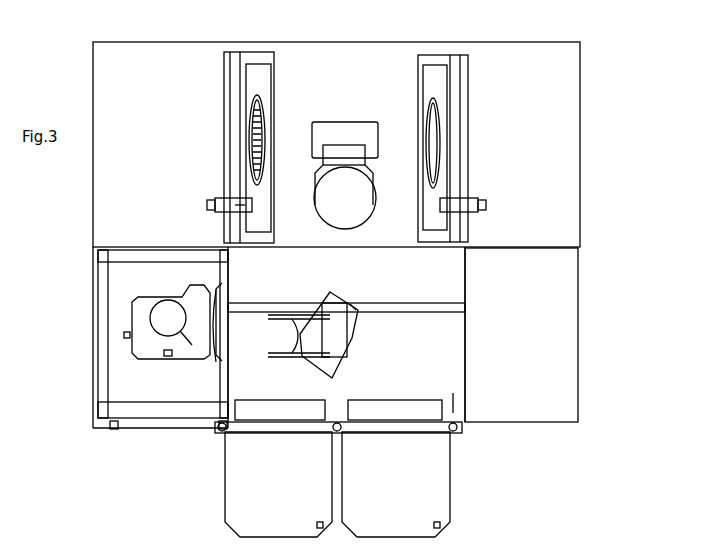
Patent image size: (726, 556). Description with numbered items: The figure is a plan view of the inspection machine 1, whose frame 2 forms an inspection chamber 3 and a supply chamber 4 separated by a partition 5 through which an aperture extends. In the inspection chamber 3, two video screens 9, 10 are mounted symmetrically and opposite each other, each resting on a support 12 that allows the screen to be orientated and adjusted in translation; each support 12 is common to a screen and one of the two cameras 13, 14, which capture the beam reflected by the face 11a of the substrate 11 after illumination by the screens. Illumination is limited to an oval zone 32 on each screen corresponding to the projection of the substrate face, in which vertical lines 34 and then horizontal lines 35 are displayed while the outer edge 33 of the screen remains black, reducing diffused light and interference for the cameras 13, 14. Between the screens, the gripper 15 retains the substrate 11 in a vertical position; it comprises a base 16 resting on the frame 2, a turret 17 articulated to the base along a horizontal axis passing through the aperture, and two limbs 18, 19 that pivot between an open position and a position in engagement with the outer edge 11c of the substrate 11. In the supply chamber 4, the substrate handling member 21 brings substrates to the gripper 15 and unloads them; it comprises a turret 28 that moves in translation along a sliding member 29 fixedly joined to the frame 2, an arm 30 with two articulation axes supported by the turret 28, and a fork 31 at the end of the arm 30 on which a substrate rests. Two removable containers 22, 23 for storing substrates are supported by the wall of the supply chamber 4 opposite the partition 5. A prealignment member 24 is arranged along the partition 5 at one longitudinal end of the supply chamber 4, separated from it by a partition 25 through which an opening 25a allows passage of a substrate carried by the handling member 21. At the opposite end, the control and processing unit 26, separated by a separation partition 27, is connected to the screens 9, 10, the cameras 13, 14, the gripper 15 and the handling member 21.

The inspection machine 1 is at (82, 50).
The frame 2 is at (580, 130).
The inspection chamber 3 is at (388, 70).
The supply chamber 4 is at (340, 340).
The partition 5 is at (536, 246).
The video screen 9 is at (448, 120).
The video screen 10 is at (278, 52).
The substrate 11 is at (314, 208).
The face 11a is at (345, 198).
The outer edge 11c is at (376, 206).
The support 12 is at (206, 204).
The camera 13 is at (452, 212).
The camera 14 is at (236, 208).
The gripper 15 is at (348, 122).
The base 16 is at (345, 140).
The turret 17 is at (344, 156).
The limb 18 is at (376, 184).
The limb 19 is at (314, 184).
The substrate handling member 21 is at (356, 334).
The container 22 is at (278, 484).
The container 23 is at (396, 484).
The prealignment member 24 is at (156, 282).
The partition 25 is at (226, 374).
The opening 25a is at (228, 322).
The control and processing unit 26 is at (521, 335).
The separation partition 27 is at (468, 360).
The turret 28 is at (318, 302).
The sliding member 29 is at (384, 303).
The arm 30 is at (346, 364).
The fork 31 is at (288, 358).
The oval zone 32 is at (252, 126).
The outer edge 33 is at (250, 88).
The vertical lines 34 is at (260, 104).
The horizontal lines 35 is at (438, 122).